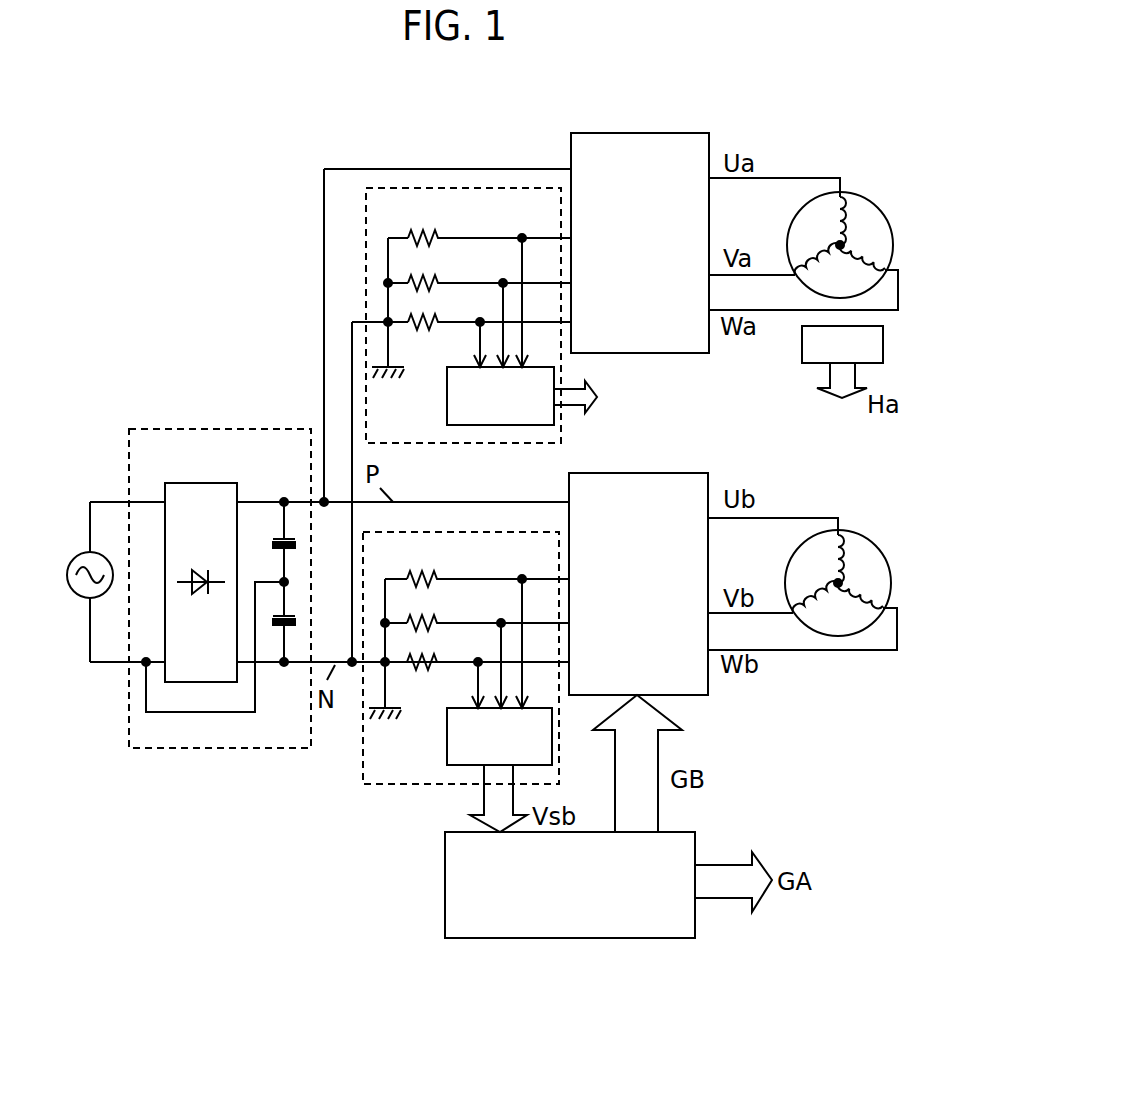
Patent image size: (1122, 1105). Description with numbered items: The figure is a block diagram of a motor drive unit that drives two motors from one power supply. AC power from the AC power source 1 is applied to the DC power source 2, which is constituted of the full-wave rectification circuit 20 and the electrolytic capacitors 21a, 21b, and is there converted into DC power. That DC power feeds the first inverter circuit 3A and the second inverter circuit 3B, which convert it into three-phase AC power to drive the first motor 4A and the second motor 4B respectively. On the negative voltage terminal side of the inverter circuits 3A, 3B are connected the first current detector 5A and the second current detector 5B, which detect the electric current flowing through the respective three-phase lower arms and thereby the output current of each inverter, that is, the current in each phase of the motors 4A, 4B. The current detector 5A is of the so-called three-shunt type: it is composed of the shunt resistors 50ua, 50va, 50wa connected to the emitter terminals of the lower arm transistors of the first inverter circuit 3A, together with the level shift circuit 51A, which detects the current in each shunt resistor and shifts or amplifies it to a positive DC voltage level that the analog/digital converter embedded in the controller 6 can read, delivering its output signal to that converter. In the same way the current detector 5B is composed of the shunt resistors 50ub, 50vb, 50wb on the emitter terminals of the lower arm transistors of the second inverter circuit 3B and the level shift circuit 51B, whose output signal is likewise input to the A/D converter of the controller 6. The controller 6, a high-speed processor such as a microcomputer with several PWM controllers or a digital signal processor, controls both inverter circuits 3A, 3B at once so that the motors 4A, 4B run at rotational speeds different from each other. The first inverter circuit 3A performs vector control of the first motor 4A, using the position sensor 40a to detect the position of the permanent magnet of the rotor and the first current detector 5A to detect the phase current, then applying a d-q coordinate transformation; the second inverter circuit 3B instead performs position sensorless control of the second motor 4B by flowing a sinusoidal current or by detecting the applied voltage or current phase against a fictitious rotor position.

The AC power source 1 is at (75, 553).
The DC power source 2 is at (202, 428).
The full-wave rectification circuit 20 is at (207, 482).
The electrolytic capacitor 21a is at (274, 532).
The electrolytic capacitor 21b is at (280, 630).
The first inverter circuit 3A is at (632, 133).
The second inverter circuit 3B is at (632, 473).
The first motor 4A is at (853, 192).
The second motor 4B is at (853, 530).
The first current detector 5A is at (462, 185).
The second current detector 5B is at (460, 530).
The shunt resistor 50ua is at (425, 233).
The shunt resistor 50va is at (422, 273).
The shunt resistor 50wa is at (415, 314).
The shunt resistor 50ub is at (425, 574).
The shunt resistor 50vb is at (425, 613).
The shunt resistor 50wb is at (418, 654).
The level shift circuit 51A is at (447, 402).
The level shift circuit 51B is at (442, 742).
The position sensor 40a is at (802, 343).
The controller 6 is at (445, 887).